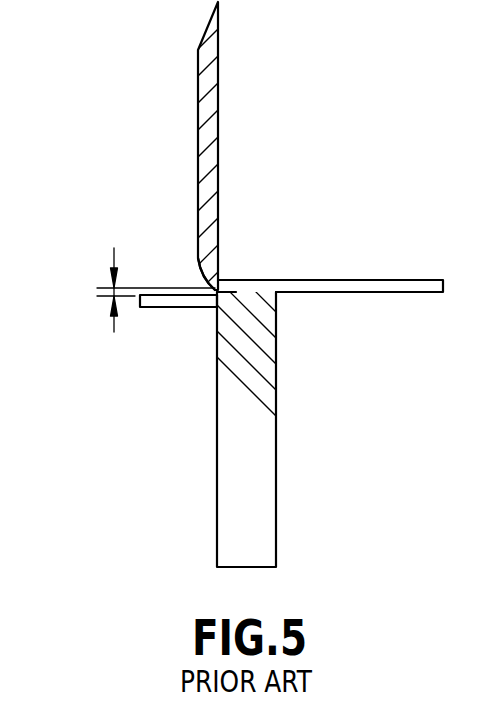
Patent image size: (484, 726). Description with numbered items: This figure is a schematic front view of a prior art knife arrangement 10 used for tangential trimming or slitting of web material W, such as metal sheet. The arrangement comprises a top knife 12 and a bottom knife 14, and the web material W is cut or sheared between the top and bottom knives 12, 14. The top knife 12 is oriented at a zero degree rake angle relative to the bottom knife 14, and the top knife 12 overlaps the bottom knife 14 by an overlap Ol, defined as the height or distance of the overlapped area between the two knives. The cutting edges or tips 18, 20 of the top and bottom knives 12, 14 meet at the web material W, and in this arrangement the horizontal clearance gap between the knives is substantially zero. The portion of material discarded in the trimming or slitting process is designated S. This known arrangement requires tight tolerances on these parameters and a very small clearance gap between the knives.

The knife arrangement 10 is at (84, 60).
The top knife 12 is at (198, 117).
The bottom knife 14 is at (276, 405).
The cutting edge of top knife 18 is at (213, 289).
The cutting edge of bottom knife 20 is at (244, 284).
The web material W is at (387, 292).
The discarded material S is at (170, 307).
The overlap Ol is at (113, 331).